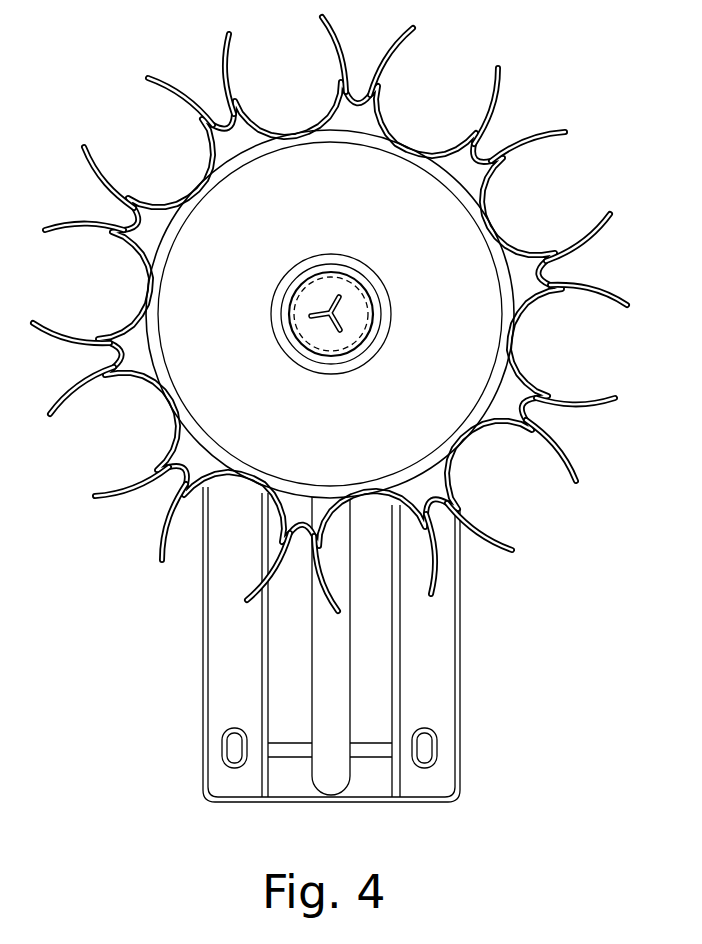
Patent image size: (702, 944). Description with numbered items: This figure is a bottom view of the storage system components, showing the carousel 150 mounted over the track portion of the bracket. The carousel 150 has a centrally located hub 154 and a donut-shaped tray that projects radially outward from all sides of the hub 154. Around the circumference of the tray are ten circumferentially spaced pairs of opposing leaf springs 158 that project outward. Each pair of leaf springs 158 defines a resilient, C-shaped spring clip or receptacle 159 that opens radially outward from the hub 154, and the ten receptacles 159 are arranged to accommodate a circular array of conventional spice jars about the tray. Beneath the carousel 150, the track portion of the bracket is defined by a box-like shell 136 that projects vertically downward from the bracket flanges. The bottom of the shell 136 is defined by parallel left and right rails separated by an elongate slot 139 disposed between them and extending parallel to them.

The shell 136 is at (378, 670).
The elongate slot 139 is at (327, 682).
The carousel 150 is at (179, 303).
The hub 154 is at (286, 293).
The leaf springs 158 is at (553, 136).
The receptacle 159 is at (543, 190).